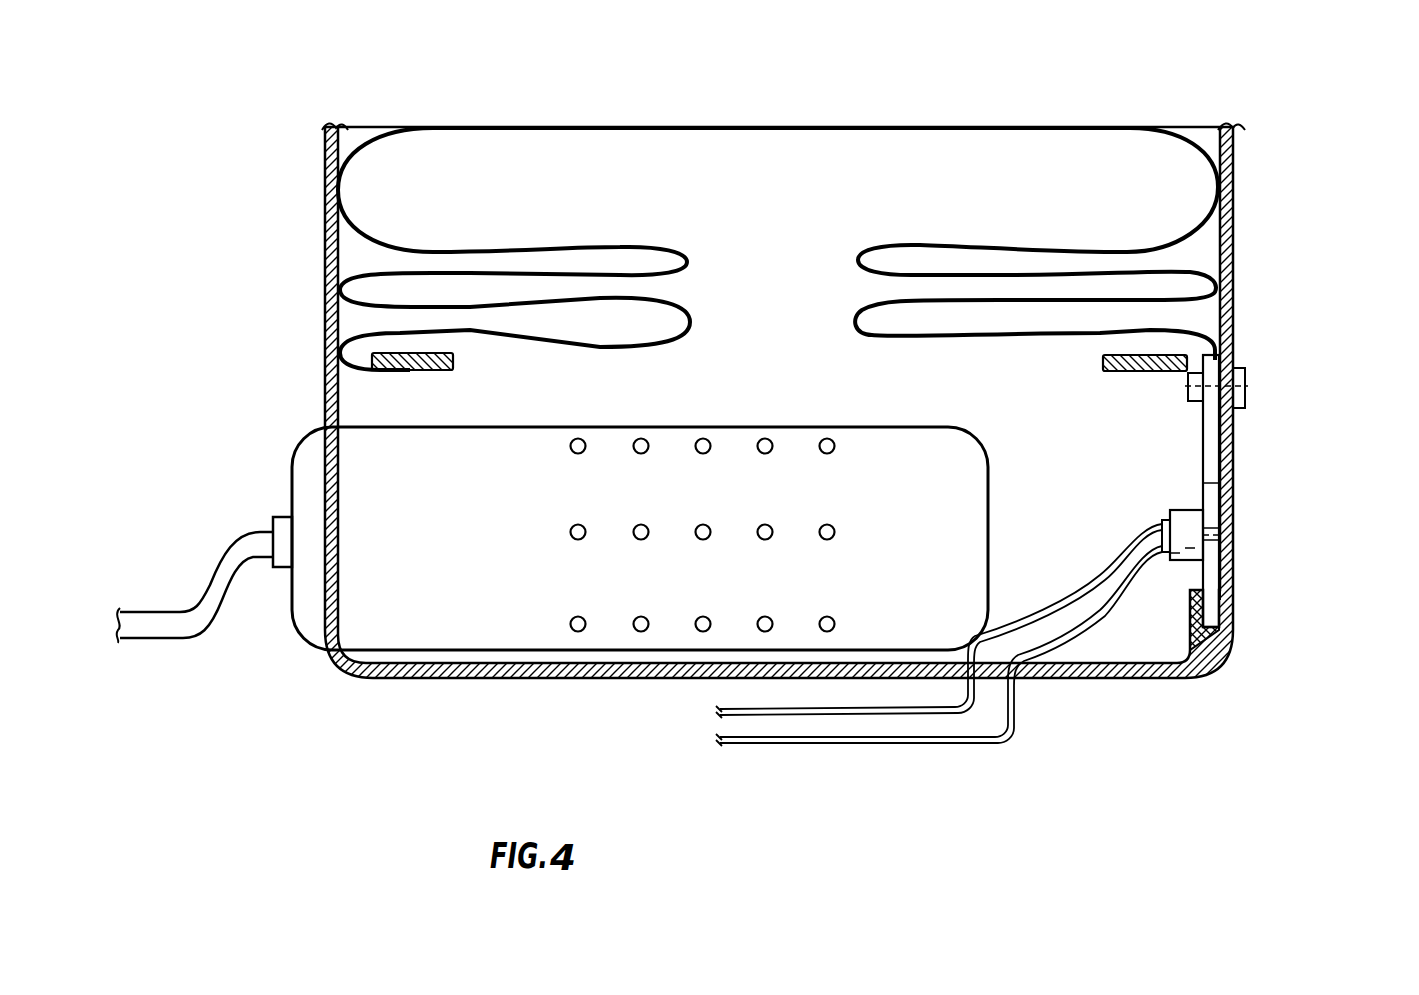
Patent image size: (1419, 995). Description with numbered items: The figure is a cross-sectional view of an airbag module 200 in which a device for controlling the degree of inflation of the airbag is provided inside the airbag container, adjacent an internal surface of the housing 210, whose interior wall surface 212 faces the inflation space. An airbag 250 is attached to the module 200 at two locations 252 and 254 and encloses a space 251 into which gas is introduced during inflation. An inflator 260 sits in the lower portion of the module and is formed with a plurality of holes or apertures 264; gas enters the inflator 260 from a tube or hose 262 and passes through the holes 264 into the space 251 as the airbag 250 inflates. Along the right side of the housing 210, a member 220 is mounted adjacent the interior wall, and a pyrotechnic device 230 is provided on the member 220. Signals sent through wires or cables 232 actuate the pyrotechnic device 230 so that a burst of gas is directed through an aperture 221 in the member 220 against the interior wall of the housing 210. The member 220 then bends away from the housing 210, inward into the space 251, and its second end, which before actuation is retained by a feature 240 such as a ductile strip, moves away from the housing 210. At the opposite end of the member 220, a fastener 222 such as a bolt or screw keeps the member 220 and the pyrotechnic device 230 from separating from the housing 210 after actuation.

The airbag module 200 is at (1285, 124).
The housing 210 is at (328, 168).
The wall inner surface 212 is at (1228, 547).
The member 220 is at (1207, 460).
The aperture 221 is at (1210, 528).
The fastener 222 is at (1245, 385).
The pyrotechnic device 230 is at (1193, 525).
The wires or cables 232 is at (1082, 633).
The feature 240 is at (1182, 678).
The airbag 250 is at (695, 128).
The space 251 is at (435, 400).
The attachment location 252 is at (388, 353).
The attachment location 254 is at (1170, 355).
The inflator 260 is at (923, 612).
The tube or hose 262 is at (215, 613).
The holes or apertures 264 is at (570, 624).